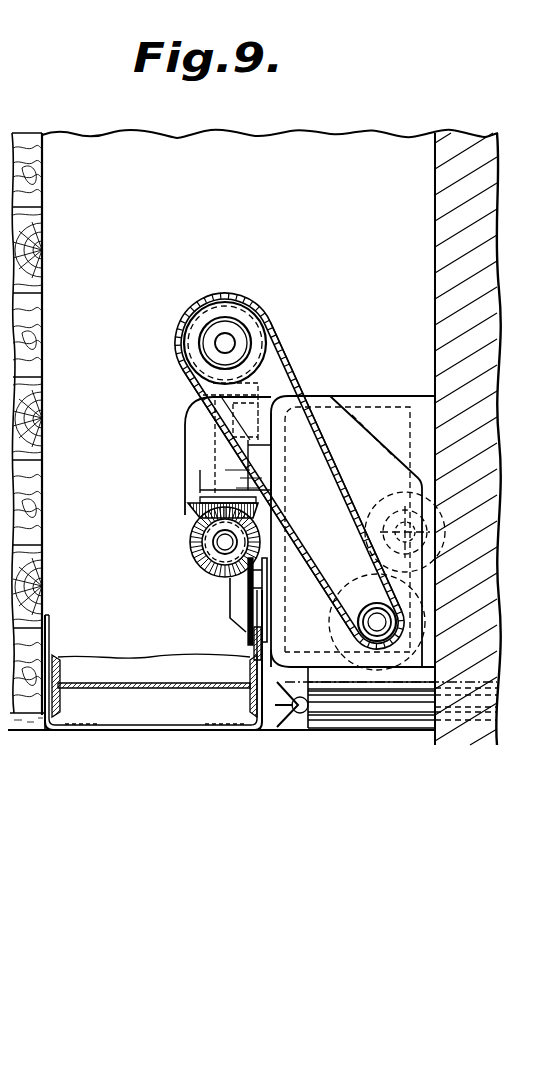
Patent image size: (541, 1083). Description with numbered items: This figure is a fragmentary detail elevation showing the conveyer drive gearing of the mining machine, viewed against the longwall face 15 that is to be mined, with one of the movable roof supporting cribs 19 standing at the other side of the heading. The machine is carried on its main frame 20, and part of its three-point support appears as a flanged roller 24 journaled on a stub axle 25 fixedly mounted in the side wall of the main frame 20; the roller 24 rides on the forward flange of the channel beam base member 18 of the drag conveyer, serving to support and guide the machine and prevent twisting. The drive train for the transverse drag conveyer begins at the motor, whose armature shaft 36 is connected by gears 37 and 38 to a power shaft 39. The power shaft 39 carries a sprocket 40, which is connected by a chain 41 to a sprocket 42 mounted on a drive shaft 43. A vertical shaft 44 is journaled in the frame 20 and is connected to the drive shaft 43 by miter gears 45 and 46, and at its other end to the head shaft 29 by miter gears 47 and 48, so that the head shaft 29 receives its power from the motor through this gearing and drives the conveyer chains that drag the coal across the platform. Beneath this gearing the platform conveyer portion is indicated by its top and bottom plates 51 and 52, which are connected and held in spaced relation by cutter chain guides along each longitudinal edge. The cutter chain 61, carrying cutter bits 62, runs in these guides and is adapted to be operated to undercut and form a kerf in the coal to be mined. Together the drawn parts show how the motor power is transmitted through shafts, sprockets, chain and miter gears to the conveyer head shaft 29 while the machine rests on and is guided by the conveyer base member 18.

The longwall face 15 is at (440, 247).
The channel beam base member 18 is at (162, 662).
The movable roof supporting crib 19 is at (35, 257).
The main frame 20 is at (350, 415).
The flanged roller 24 is at (237, 622).
The stub axle 25 is at (287, 614).
The head shaft 29 is at (215, 568).
The armature shaft 36 is at (405, 532).
The gear 37 is at (383, 495).
The gear 38 is at (427, 617).
The power shaft 39 is at (382, 630).
The sprocket 40 is at (372, 598).
The chain 41 is at (283, 382).
The sprocket 42 is at (232, 298).
The drive shaft 43 is at (223, 344).
The vertical shaft 44 is at (217, 463).
The miter gear 45 is at (268, 322).
The miter gear 46 is at (192, 368).
The miter gear 47 is at (195, 514).
The miter gear 48 is at (193, 545).
The top plate 51 is at (390, 688).
The bottom plate 52 is at (420, 722).
The cutter chain 61 is at (356, 705).
The cutter bit 62 is at (292, 725).